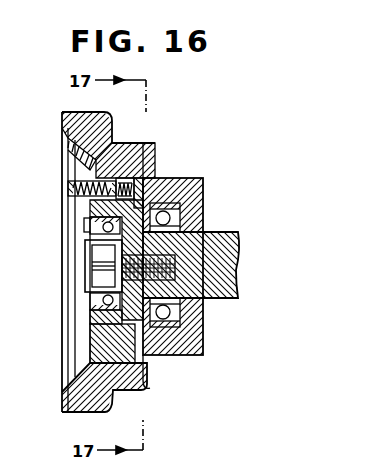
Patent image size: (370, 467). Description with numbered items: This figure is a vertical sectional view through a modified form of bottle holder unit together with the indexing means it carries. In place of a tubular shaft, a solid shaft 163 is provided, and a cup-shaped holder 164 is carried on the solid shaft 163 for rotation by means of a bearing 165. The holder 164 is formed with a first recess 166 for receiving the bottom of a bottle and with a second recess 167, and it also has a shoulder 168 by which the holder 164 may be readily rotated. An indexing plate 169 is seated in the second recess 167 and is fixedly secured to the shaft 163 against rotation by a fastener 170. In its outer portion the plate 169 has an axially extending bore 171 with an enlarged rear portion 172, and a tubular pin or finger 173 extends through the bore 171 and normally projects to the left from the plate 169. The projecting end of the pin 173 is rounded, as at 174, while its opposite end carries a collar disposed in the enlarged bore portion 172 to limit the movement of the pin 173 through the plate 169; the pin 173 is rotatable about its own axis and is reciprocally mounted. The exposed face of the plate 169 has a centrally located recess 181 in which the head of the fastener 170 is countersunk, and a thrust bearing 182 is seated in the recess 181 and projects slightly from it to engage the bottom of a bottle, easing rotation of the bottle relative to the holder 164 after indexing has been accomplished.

The solid shaft 163 is at (215, 232).
The cup-shaped holder 164 is at (150, 175).
The bearing 165 is at (174, 203).
The first recess 166 is at (75, 377).
The second recess 167 is at (156, 366).
The shoulder 168 is at (128, 394).
The indexing plate 169 is at (95, 335).
The fastener 170 is at (93, 277).
The bore 171 is at (72, 176).
The enlarged rear portion 172 is at (118, 152).
The tubular pin 173 is at (78, 222).
The rounded end 174 is at (64, 190).
The centrally located recess 181 is at (88, 310).
The thrust bearing 182 is at (85, 245).